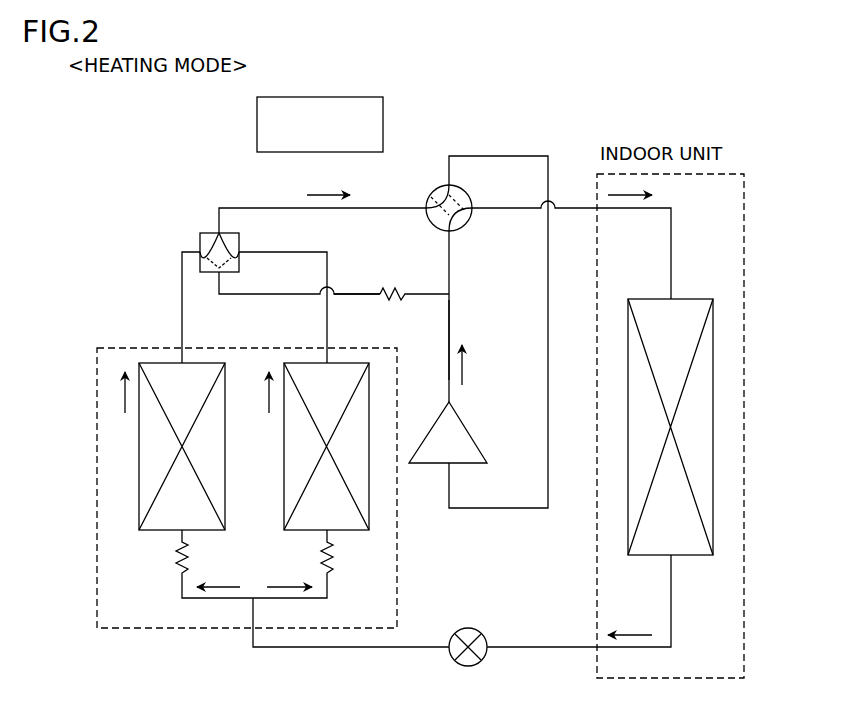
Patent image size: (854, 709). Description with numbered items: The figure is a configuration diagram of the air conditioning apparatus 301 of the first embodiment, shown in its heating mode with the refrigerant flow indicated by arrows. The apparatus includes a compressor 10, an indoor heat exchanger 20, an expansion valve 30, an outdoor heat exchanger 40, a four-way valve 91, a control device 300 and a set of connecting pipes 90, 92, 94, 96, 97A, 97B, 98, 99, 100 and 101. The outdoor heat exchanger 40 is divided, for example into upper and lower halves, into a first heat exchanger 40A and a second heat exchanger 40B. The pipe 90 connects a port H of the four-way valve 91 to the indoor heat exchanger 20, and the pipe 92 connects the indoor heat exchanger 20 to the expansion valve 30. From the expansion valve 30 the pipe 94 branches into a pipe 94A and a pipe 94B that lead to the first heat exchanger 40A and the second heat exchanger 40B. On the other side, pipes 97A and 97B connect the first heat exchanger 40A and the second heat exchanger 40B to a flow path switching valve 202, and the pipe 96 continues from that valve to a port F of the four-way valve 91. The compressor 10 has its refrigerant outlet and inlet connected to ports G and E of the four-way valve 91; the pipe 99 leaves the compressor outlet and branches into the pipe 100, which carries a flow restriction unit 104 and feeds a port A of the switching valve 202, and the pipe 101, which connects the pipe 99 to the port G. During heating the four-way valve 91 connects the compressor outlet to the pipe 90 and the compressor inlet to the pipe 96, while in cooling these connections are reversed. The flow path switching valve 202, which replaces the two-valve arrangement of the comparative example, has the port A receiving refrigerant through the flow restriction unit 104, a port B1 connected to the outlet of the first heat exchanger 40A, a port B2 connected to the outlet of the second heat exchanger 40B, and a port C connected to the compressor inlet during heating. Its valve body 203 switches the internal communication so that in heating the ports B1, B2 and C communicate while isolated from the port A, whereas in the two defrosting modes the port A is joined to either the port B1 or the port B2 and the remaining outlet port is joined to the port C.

The air conditioning apparatus 301 is at (167, 118).
The control device 300 is at (383, 122).
The compressor 10 is at (470, 433).
The indoor heat exchanger 20 is at (688, 299).
The expansion valve 30 is at (480, 662).
The outdoor heat exchanger 40 is at (128, 630).
The first heat exchanger 40A is at (150, 532).
The second heat exchanger 40B is at (357, 532).
The pipe 90 is at (520, 210).
The four-way valve 91 is at (437, 188).
The pipe 92 is at (550, 645).
The pipe 94 is at (387, 650).
The pipe 94A is at (205, 600).
The pipe 94B is at (280, 600).
The pipe 96 is at (282, 207).
The pipe 97A is at (180, 326).
The pipe 97B is at (325, 326).
The pipe 98 is at (499, 155).
The pipe 99 is at (452, 328).
The pipe 100 is at (360, 292).
The pipe 101 is at (453, 273).
The flow restriction unit 104 is at (393, 310).
The flow path switching valve 202 is at (203, 222).
The valve body 203 is at (225, 272).
The port A is at (217, 274).
The port B1 is at (200, 250).
The port B2 is at (239, 252).
The port C is at (222, 238).
The port E is at (455, 190).
The port F is at (426, 208).
The port G is at (449, 227).
The port H is at (472, 208).